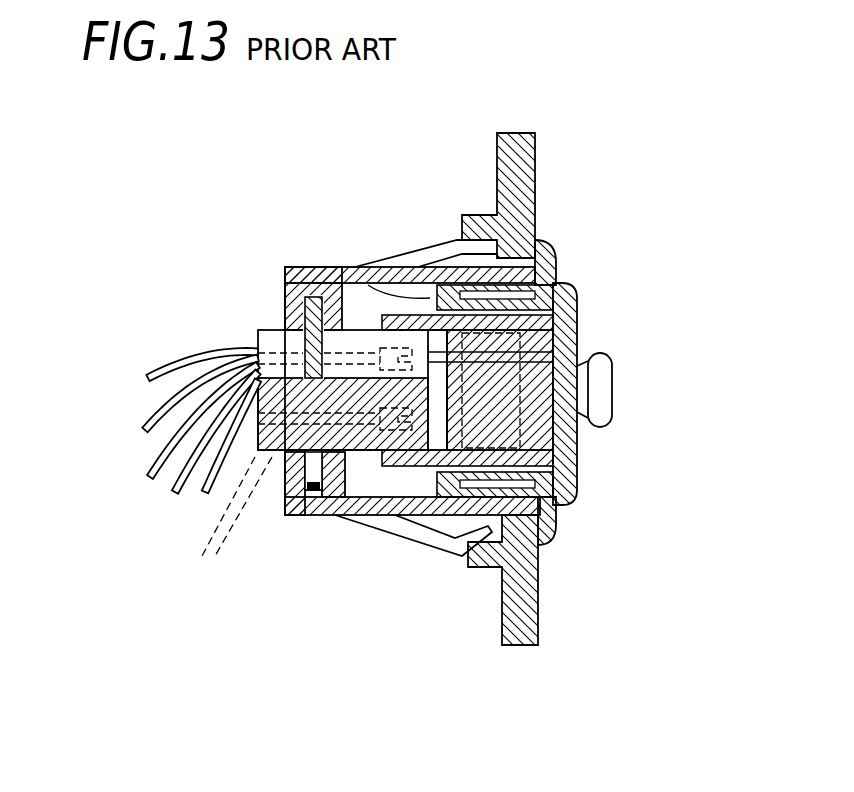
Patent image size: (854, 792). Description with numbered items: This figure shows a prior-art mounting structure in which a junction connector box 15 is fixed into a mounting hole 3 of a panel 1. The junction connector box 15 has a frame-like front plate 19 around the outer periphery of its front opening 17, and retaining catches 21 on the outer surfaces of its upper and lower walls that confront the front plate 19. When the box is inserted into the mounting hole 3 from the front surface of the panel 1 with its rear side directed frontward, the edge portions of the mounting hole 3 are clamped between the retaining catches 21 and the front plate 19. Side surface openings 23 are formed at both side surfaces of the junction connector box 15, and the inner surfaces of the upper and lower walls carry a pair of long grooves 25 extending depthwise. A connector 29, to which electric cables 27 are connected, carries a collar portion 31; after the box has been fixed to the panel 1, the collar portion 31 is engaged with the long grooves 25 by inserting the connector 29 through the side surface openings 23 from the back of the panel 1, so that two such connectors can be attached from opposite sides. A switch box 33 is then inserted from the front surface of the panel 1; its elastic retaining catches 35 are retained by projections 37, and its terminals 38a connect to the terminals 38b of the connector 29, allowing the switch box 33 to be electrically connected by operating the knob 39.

The panel 1 is at (538, 610).
The mounting hole 3 is at (545, 245).
The junction connector box 15 is at (297, 267).
The front opening 17 is at (580, 503).
The front plate 19 is at (555, 248).
The retaining catches 21 is at (428, 255).
The side surface openings 23 is at (355, 505).
The long grooves 25 is at (292, 516).
The electric cables 27 is at (168, 362).
The connector 29 is at (258, 377).
The collar portion 31 is at (303, 341).
The switch box 33 is at (578, 302).
The elastic retaining catches 35 is at (353, 267).
The projections 37 is at (557, 268).
The terminals 38a is at (578, 341).
The terminals 38b is at (209, 558).
The knobs 39 is at (600, 388).